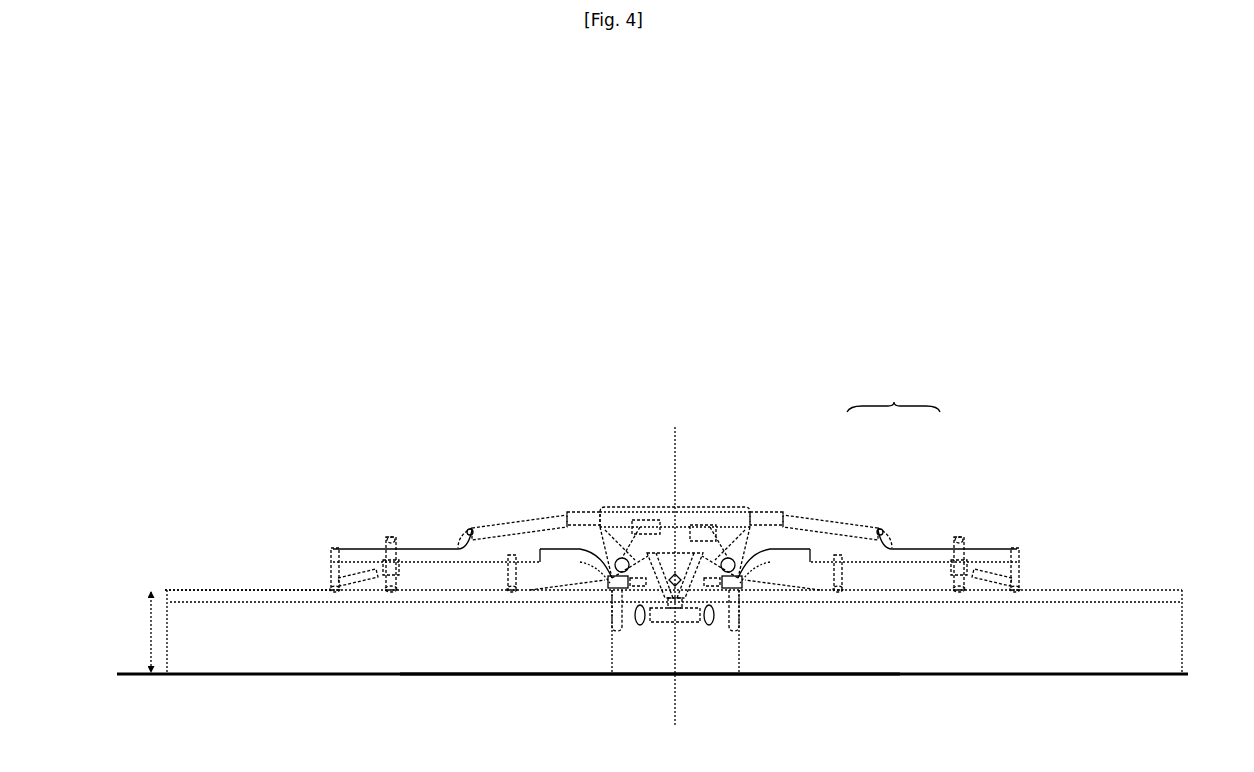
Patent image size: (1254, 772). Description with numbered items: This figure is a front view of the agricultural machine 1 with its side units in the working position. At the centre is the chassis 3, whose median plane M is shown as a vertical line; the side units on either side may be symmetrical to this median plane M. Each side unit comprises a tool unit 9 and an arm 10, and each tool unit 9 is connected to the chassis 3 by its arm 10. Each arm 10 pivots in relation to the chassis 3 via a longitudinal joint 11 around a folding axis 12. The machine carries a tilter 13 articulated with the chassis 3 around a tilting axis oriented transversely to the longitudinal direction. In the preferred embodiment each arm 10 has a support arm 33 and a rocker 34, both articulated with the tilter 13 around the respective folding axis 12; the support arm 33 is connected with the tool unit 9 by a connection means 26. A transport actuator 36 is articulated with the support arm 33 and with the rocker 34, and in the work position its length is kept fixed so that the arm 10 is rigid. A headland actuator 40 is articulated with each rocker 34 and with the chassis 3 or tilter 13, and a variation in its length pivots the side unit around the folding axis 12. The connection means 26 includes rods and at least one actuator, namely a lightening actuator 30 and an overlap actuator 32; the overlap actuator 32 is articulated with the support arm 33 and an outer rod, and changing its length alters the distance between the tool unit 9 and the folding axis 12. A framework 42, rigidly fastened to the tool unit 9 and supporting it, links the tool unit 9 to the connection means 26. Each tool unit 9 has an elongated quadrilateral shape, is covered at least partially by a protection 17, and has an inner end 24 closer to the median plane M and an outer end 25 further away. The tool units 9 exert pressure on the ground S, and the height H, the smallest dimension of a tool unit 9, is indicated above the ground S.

The agricultural machine 1 is at (1067, 396).
The chassis 3 is at (685, 605).
The tool unit 9 is at (221, 586).
The arm 10 is at (893, 396).
The longitudinal joint 11 is at (741, 588).
The folding axis 12 is at (612, 583).
The tilter 13 is at (694, 540).
The protection 17 is at (243, 590).
The inner end 24 is at (623, 695).
The outer end 25 is at (158, 690).
The connection means 26 is at (315, 575).
The lightening actuator 30 is at (386, 565).
The overlap actuator 32 is at (355, 580).
The support arm 33 is at (477, 558).
The rocker 34 is at (598, 527).
The transport actuator 36 is at (923, 530).
The headland actuator 40 is at (646, 525).
The framework 42 is at (398, 572).
The height H is at (152, 610).
The median plane M is at (675, 710).
The ground S is at (537, 674).